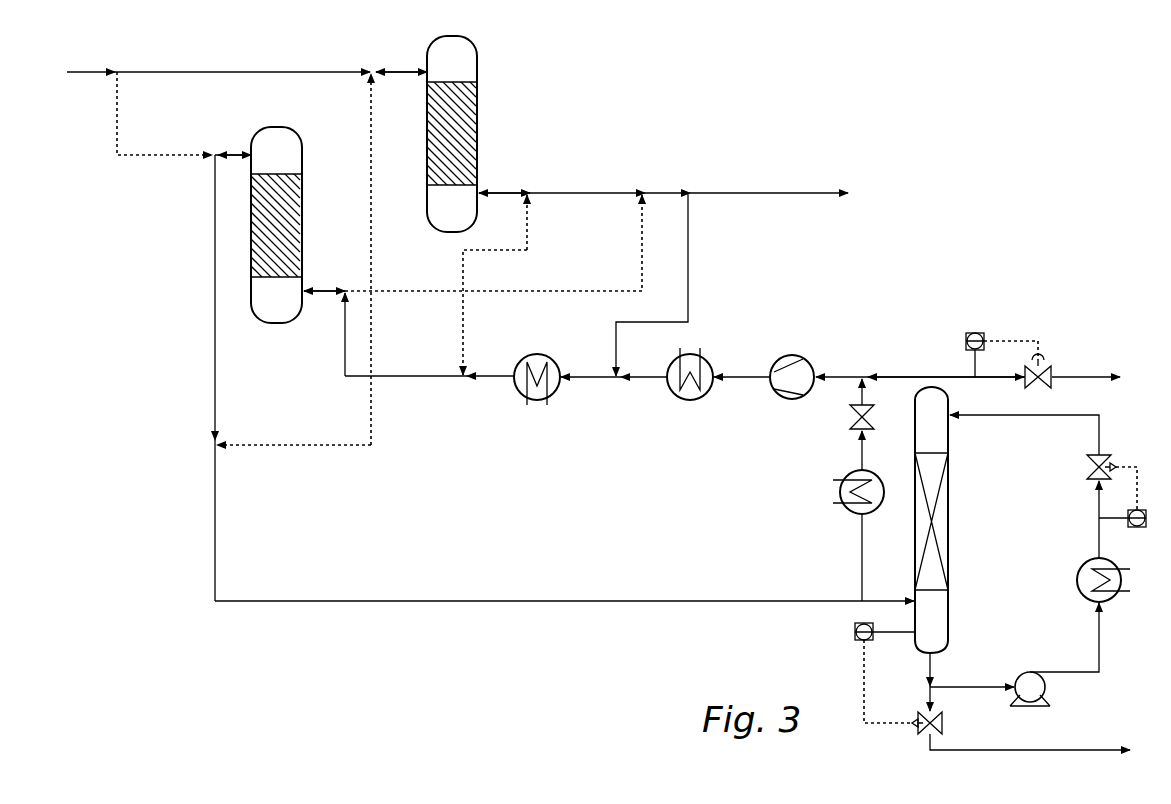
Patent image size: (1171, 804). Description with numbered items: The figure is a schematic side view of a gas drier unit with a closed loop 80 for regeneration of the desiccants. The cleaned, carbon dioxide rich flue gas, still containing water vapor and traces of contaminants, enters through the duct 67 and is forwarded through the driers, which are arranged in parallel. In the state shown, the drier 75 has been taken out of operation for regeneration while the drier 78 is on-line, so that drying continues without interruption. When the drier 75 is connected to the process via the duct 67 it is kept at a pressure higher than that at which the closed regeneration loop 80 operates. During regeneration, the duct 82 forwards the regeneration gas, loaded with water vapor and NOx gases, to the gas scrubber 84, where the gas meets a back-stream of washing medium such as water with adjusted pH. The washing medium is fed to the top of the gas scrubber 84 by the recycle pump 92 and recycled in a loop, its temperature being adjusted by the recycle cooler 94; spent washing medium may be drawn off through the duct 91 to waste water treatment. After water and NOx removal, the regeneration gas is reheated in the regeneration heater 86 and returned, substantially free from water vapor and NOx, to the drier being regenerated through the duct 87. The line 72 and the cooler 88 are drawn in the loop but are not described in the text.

The duct 67 is at (90, 72).
The product stream line 72 is at (720, 191).
The drier 75 is at (302, 212).
The drier 78 is at (477, 135).
The closed loop 80 is at (510, 652).
The duct 82 is at (345, 600).
The gas scrubber 84 is at (948, 515).
The regeneration heater 86 is at (537, 354).
The duct 87 is at (400, 378).
The cooler 88 is at (690, 400).
The duct 91 is at (998, 748).
The recycle pump 92 is at (1048, 690).
The recycle cooler 94 is at (1077, 590).